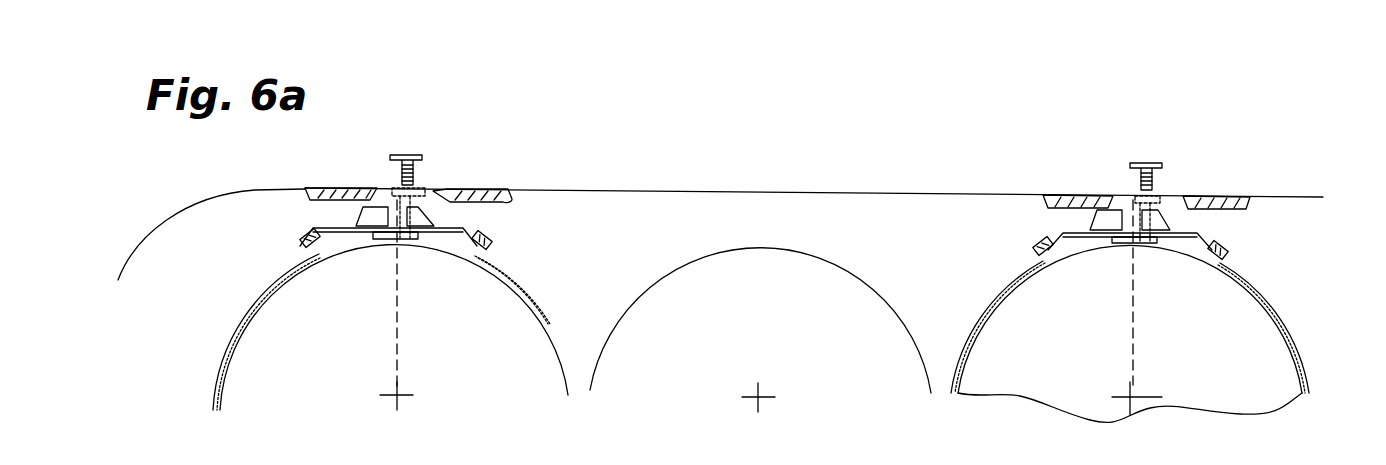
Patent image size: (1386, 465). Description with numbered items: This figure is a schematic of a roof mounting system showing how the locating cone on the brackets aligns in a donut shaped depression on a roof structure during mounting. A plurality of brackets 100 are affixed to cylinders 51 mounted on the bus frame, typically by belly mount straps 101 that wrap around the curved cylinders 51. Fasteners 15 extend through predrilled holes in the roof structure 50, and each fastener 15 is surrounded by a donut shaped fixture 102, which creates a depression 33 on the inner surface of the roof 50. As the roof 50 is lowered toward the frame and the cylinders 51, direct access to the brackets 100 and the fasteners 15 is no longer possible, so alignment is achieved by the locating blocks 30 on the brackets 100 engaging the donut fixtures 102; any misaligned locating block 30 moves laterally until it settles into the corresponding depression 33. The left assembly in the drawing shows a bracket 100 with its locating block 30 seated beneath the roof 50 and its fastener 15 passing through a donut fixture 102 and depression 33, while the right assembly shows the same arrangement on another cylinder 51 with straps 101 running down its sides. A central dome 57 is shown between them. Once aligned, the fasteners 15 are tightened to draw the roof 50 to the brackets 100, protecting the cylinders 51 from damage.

The fastener 15 is at (425, 157).
The depression 33 is at (445, 186).
The donut shaped fixture 102 is at (510, 202).
The roof structure 50 is at (760, 191).
The locating block 30 is at (365, 209).
The bracket 100 is at (463, 230).
The belly mount strap 101 is at (277, 284).
The cylinder 51 is at (270, 360).
The middle dome 57 is at (865, 270).